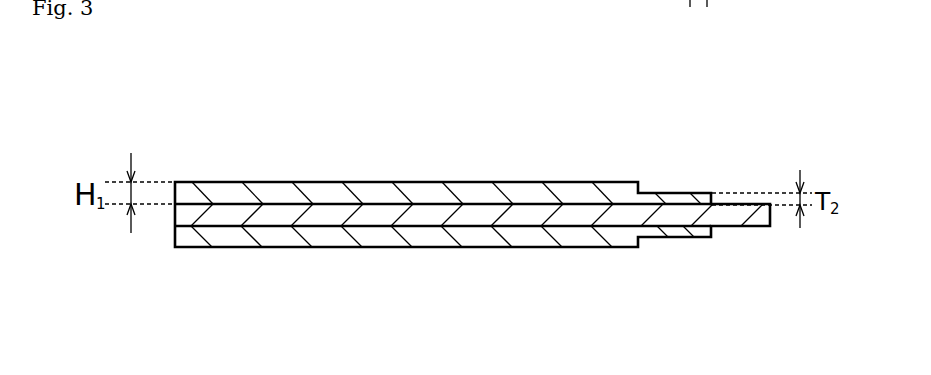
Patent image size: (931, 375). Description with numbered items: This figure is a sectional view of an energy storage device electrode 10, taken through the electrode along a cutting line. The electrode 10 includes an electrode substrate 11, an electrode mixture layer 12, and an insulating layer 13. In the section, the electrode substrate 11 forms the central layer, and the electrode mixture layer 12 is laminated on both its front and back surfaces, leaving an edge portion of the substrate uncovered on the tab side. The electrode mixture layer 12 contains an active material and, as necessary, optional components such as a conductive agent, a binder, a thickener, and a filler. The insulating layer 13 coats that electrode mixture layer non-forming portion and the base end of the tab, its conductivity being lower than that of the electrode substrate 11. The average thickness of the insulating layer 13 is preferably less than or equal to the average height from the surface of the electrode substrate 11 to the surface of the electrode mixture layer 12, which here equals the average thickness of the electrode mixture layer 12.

The electrode 10 is at (243, 147).
The electrode substrate 11 is at (372, 215).
The electrode mixture layer 12 is at (428, 193).
The insulating layer 13 is at (677, 197).